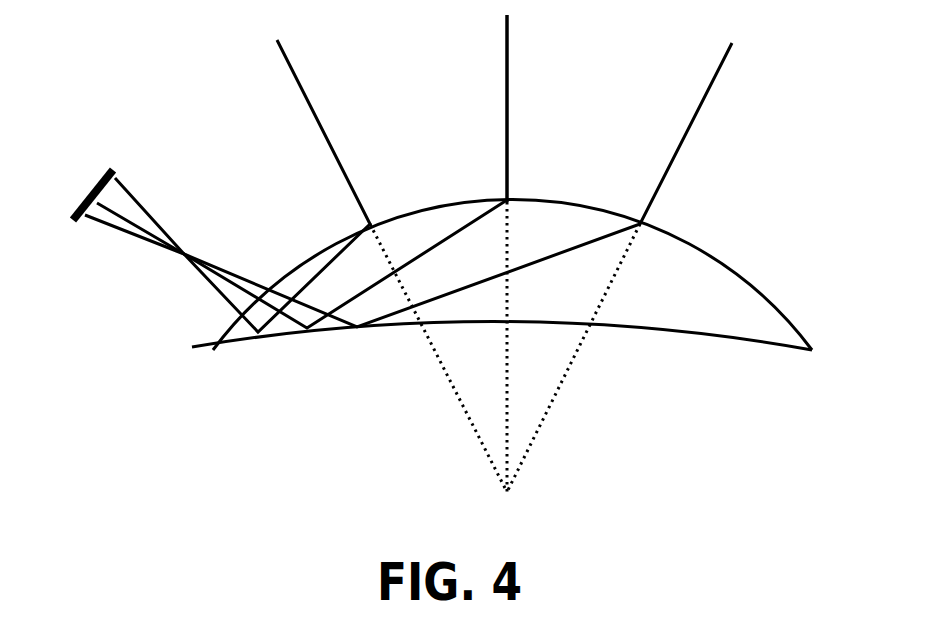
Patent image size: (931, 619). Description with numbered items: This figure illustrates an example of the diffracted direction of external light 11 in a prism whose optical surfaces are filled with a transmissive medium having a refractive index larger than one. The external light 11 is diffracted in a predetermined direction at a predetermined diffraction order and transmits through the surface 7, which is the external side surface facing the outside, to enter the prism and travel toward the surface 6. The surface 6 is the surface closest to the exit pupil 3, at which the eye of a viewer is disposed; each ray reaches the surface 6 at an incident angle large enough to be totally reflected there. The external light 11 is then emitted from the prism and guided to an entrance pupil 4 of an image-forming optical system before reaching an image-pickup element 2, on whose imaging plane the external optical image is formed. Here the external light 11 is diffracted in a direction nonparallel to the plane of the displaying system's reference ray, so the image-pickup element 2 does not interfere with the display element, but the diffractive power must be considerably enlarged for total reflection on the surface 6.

The image-pickup element 2 is at (87, 201).
The exit pupil 3 is at (503, 498).
The entrance pupil 4 is at (183, 250).
The second surface 6 is at (710, 334).
The first surface 7 is at (740, 275).
The external light 11 is at (505, 63).